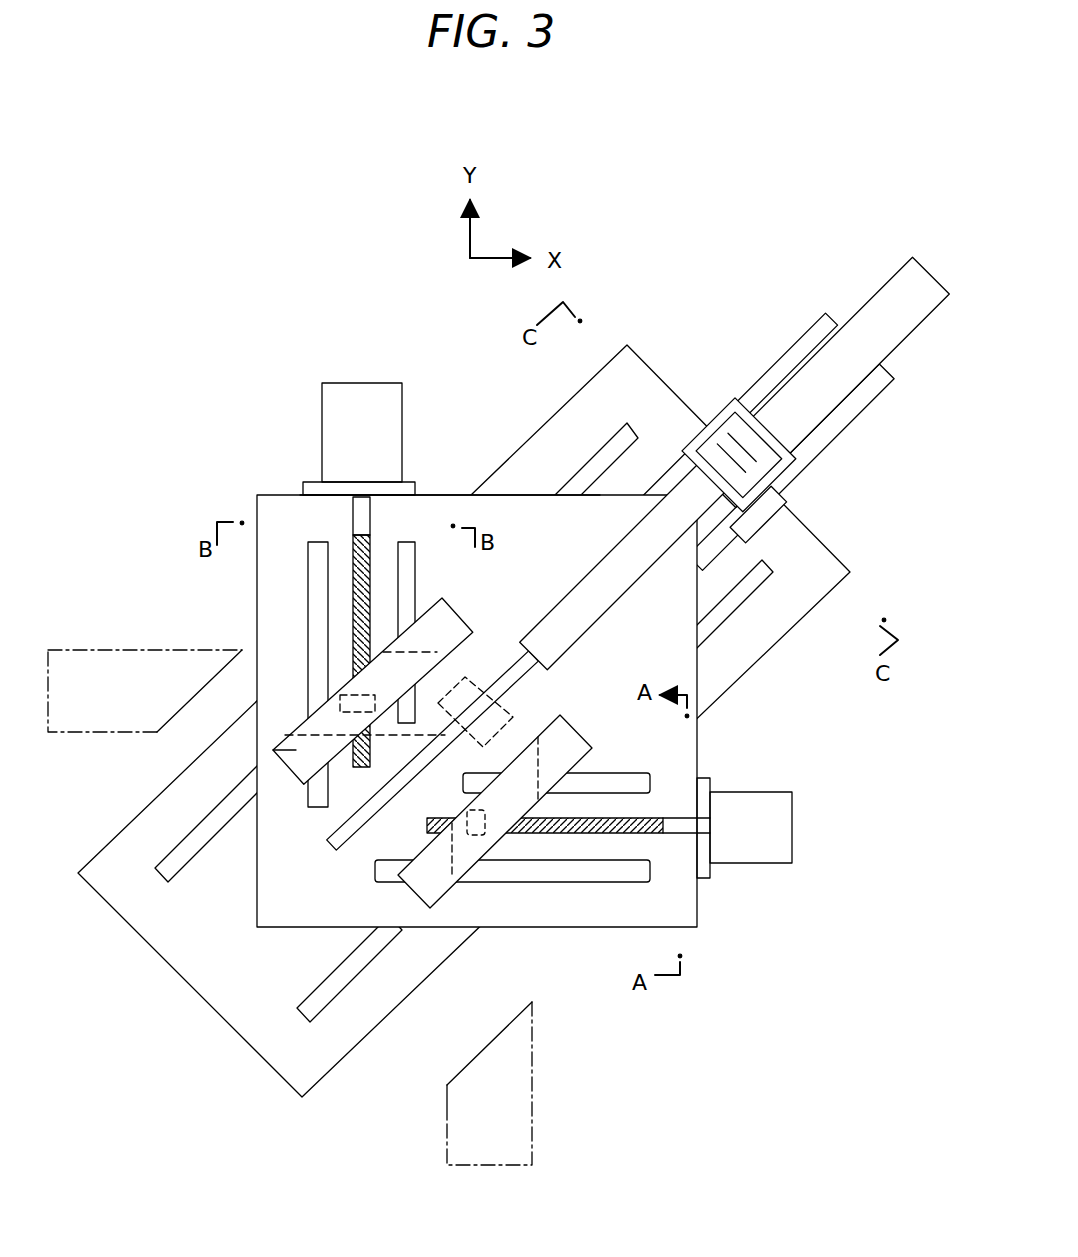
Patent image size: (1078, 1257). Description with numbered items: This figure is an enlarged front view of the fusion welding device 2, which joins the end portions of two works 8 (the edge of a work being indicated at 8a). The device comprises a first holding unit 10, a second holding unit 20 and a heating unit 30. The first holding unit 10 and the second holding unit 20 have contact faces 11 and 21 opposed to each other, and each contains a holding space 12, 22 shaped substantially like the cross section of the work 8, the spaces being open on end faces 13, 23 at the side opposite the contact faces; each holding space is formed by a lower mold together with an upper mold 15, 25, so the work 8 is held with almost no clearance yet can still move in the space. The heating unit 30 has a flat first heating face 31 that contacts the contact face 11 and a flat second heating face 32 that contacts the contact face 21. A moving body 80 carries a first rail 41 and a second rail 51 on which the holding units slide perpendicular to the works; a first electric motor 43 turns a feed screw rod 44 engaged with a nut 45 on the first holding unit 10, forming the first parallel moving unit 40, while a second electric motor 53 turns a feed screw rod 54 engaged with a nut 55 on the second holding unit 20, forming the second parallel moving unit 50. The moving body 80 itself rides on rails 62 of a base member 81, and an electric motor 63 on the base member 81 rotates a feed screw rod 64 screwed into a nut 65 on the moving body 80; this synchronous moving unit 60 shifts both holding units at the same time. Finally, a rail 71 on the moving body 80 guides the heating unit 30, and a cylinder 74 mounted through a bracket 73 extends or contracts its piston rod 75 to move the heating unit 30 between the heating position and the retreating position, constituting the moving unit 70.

The fusion welding device 2 is at (627, 340).
The work 8 is at (93, 627).
The workpiece edge 8a is at (190, 728).
The first holding unit 10 is at (577, 712).
The contact face 11 is at (563, 720).
The holding space 12 is at (455, 862).
The end face 13 is at (598, 756).
The upper mold 15 is at (405, 888).
The second holding unit 20 is at (452, 596).
The contact face 21 is at (473, 648).
The holding space 22 is at (313, 733).
The end face 23 is at (432, 598).
The upper mold 25 is at (277, 746).
The heating unit 30 is at (625, 600).
The first heating face 31 is at (617, 592).
The second heating face 32 is at (585, 573).
The first parallel moving unit 40 is at (667, 868).
The first rail 41 is at (637, 772).
The first electric motor 43 is at (767, 800).
The feed screw rod 44 is at (633, 813).
The nut 45 is at (470, 806).
The second parallel moving unit 50 is at (288, 548).
The second rail 51 is at (403, 577).
The second electric motor 53 is at (350, 402).
The feed screw rod 54 is at (355, 513).
The nut 55 is at (342, 680).
The synchronous moving unit 60 is at (812, 507).
The rail 62 is at (592, 462).
The electric motor 63 is at (860, 403).
The feed screw rod 64 is at (747, 500).
The nut 65 is at (440, 720).
The moving unit 70 is at (685, 443).
The rail 71 is at (347, 835).
The bracket 73 is at (670, 477).
The cylinder 74 is at (883, 280).
The piston rod 75 is at (722, 407).
The moving body 80 is at (458, 493).
The base member 81 is at (790, 603).